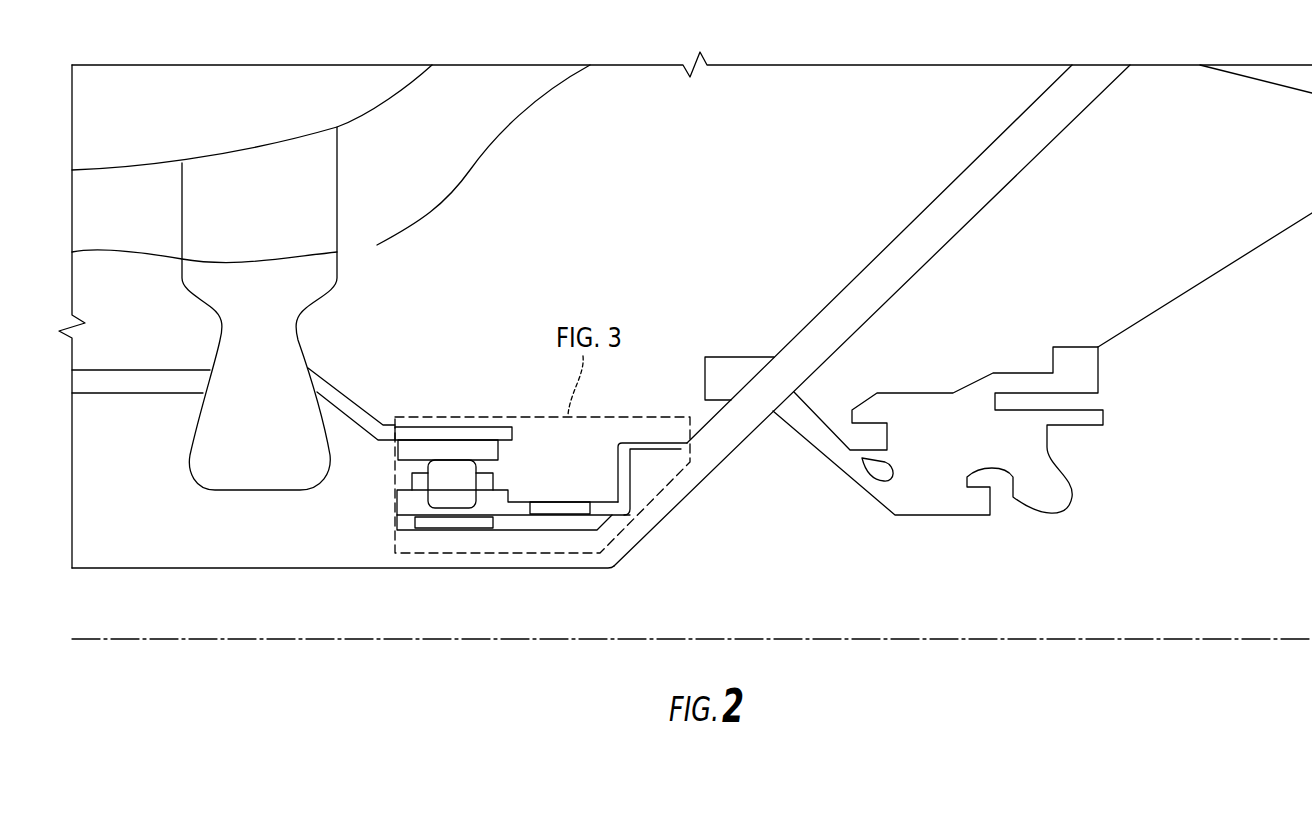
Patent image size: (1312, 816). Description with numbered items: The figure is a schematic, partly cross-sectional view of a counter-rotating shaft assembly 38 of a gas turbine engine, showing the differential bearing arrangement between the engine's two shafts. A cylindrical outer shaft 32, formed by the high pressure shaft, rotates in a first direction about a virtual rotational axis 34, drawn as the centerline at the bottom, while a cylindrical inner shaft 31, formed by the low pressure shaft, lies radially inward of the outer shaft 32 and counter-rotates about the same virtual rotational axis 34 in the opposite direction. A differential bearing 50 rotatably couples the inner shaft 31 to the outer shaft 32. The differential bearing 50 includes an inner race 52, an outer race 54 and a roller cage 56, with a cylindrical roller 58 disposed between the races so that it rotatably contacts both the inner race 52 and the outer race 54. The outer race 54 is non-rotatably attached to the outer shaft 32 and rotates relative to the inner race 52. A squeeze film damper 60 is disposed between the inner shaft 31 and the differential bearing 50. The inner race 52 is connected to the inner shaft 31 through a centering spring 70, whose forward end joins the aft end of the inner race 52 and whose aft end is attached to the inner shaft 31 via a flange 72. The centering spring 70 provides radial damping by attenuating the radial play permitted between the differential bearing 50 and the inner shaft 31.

The inner shaft 31 is at (350, 560).
The outer shaft 32 is at (412, 427).
The virtual rotational axis 34 is at (702, 638).
The counter-rotating shaft assembly 38 is at (477, 404).
The differential bearing 50 is at (390, 471).
The inner race 52 is at (412, 500).
The outer race 54 is at (502, 452).
The roller cage 56 is at (417, 480).
The cylindrical roller 58 is at (470, 466).
The squeeze film damper 60 is at (499, 523).
The centering spring 70 is at (562, 511).
The flange 72 is at (622, 442).